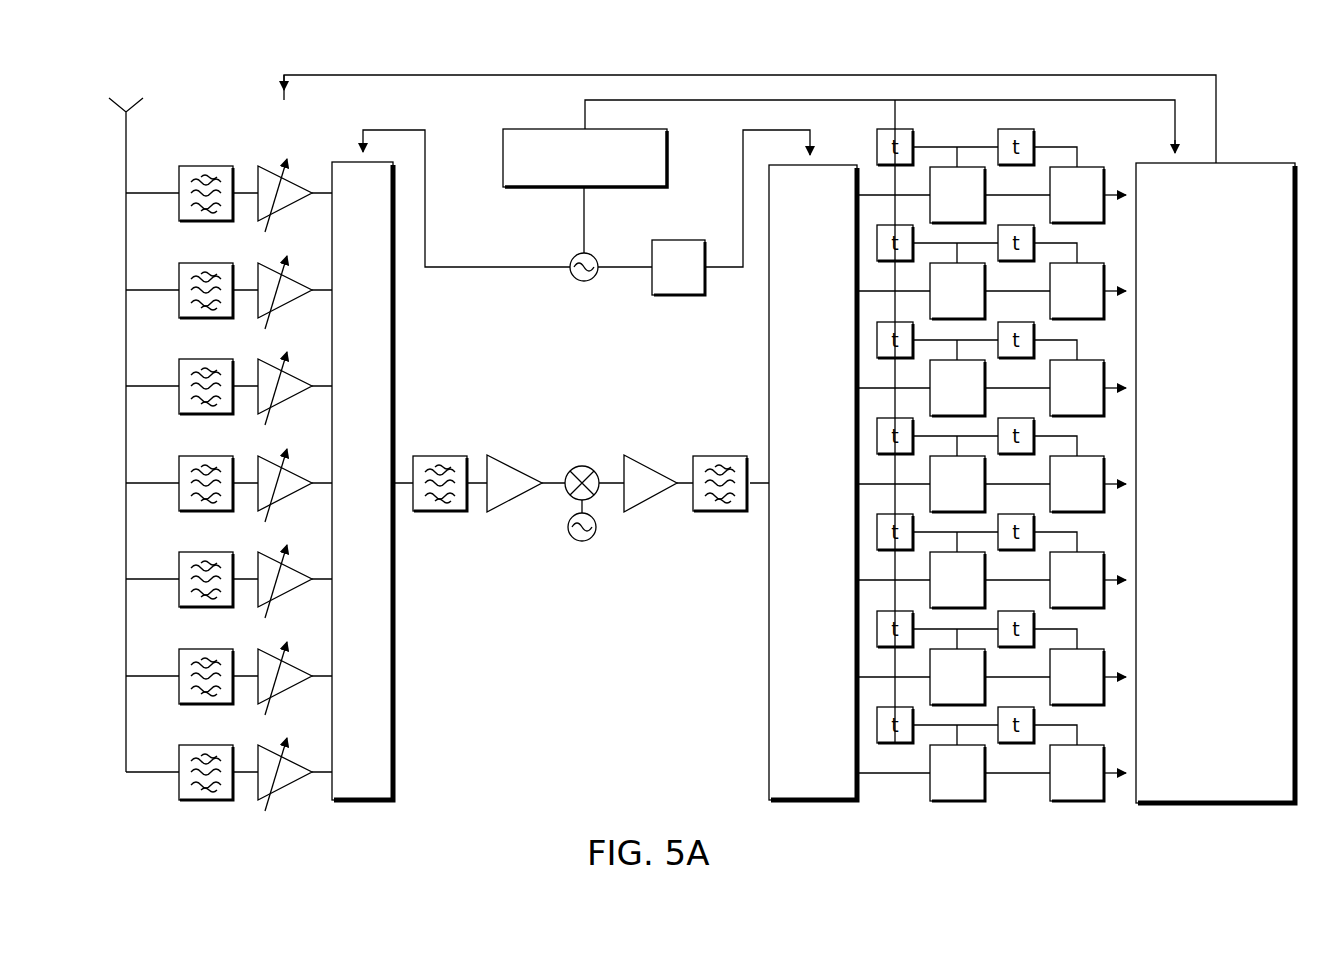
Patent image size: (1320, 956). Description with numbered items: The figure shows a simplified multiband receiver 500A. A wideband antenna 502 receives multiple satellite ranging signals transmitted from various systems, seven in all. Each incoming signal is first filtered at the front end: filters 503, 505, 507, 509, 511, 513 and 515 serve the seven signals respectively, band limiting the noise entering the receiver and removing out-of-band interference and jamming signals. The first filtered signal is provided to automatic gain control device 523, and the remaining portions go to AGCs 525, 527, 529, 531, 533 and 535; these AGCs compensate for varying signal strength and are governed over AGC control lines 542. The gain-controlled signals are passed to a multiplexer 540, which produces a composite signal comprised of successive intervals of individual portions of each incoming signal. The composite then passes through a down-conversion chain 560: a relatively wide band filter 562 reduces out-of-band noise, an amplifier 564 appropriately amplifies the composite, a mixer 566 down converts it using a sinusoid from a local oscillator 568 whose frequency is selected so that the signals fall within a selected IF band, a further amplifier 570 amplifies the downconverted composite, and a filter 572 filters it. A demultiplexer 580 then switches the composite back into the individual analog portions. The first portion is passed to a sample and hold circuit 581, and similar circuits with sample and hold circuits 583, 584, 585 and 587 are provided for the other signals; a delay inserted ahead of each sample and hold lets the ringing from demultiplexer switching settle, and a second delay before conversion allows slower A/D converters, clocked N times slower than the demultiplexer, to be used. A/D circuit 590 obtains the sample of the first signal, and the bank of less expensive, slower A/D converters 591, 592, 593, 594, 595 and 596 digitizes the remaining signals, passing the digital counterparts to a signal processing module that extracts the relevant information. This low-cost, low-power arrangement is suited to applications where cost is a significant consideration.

The simplified multiband receiver 500A is at (668, 773).
The antenna 502 is at (135, 101).
The front end filter 503 is at (179, 215).
The front end filter 505 is at (179, 312).
The front end filter 507 is at (179, 408).
The front end filter 509 is at (179, 505).
The front end filter 511 is at (179, 601).
The front end filter 513 is at (179, 698).
The front end filter 515 is at (179, 794).
The automatic gain control device 523 is at (296, 205).
The automatic gain control device 525 is at (296, 302).
The automatic gain control device 527 is at (296, 398).
The automatic gain control device 529 is at (296, 495).
The automatic gain control device 531 is at (296, 591).
The automatic gain control device 533 is at (296, 688).
The automatic gain control device 535 is at (296, 784).
The multiplexer 540 is at (363, 800).
The AGC control lines 542 is at (313, 73).
The down-conversion chain 560 is at (581, 540).
The wide band filter 562 is at (440, 511).
The amplifier 564 is at (505, 502).
The mixer 566 is at (572, 468).
The local oscillator 568 is at (572, 544).
The amplifier 570 is at (645, 502).
The filter 572 is at (720, 503).
The demultiplexer 580 is at (810, 800).
The sample and hold circuit 581 is at (987, 182).
The sample and hold circuit 583 is at (987, 375).
The sample and hold circuit 584 is at (987, 471).
The sample and hold circuit 585 is at (987, 567).
The sample and hold circuit 587 is at (987, 760).
The A/D circuit 590 is at (1049, 203).
The A/D converter 591 is at (1049, 299).
The A/D converter 592 is at (1049, 396).
The A/D converter 593 is at (1049, 492).
The A/D converter 594 is at (1049, 588).
The A/D converter 595 is at (1049, 685).
The A/D converter 596 is at (1049, 781).